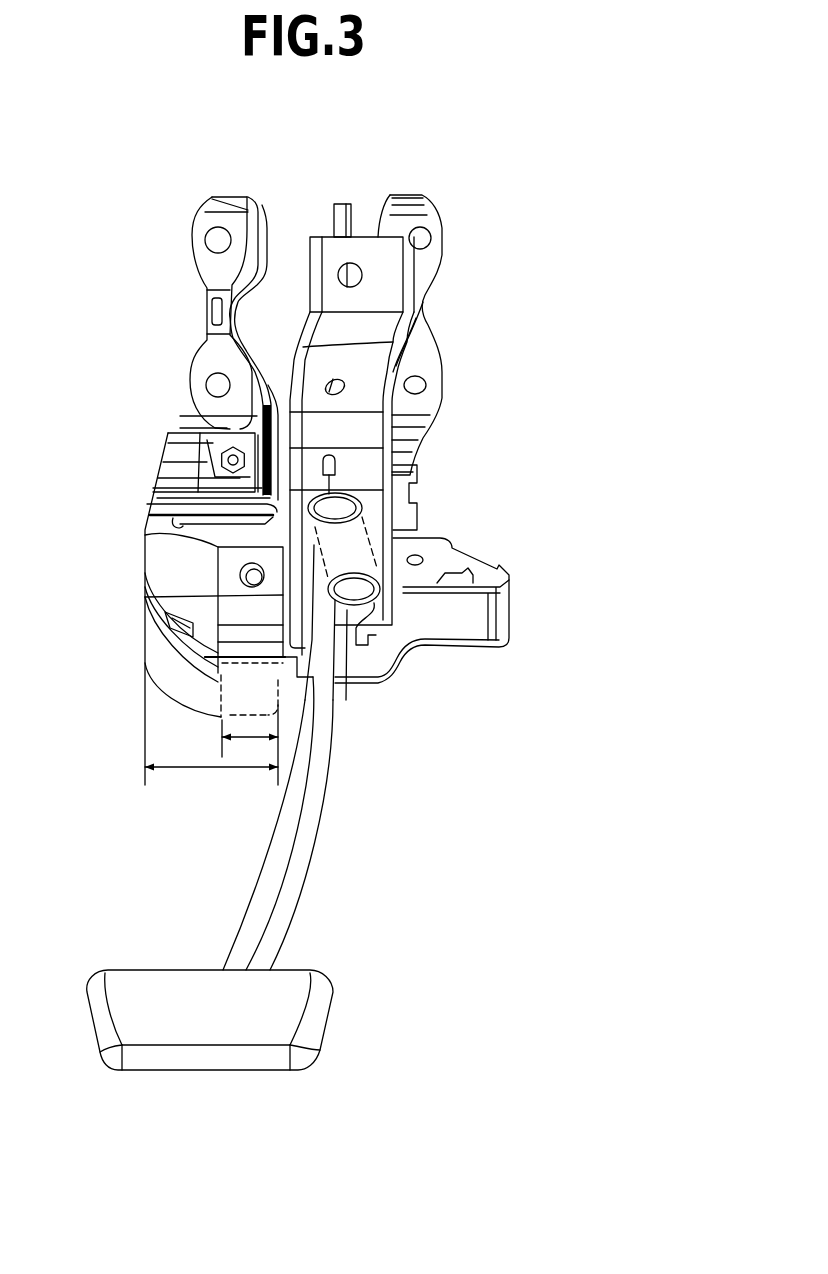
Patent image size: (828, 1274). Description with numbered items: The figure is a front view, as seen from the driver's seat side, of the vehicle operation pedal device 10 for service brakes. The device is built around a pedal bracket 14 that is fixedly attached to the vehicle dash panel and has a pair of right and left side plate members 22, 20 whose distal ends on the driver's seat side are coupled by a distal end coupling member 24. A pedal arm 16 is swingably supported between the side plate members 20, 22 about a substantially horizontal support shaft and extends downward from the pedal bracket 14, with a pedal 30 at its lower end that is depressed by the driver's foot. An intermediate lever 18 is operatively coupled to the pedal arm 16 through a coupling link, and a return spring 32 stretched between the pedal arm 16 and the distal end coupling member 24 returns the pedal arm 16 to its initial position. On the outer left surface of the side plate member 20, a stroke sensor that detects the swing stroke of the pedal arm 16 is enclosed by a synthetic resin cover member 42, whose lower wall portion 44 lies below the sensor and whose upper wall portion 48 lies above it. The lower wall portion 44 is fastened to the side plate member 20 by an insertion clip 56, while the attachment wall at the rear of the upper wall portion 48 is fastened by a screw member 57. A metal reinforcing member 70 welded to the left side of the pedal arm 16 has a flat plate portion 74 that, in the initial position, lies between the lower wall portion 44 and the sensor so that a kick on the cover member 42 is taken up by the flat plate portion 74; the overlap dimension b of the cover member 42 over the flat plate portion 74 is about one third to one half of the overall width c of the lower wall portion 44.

The operation pedal device 10 is at (461, 157).
The pedal bracket 14 is at (183, 192).
The pedal arm 16 is at (305, 853).
The intermediate lever 18 is at (334, 217).
The side plate member 20 is at (260, 374).
The side plate member 22 is at (410, 367).
The distal end coupling member 24 is at (387, 325).
The pedal 30 is at (197, 1027).
The return spring 32 is at (363, 521).
The cover member 42 is at (98, 634).
The lower wall portion 44 is at (183, 565).
The upper wall portion 48 is at (173, 507).
The insertion clip 56 is at (240, 582).
The screw member 57 is at (228, 448).
The reinforcing member 70 is at (324, 698).
The flat plate portion 74 is at (250, 695).